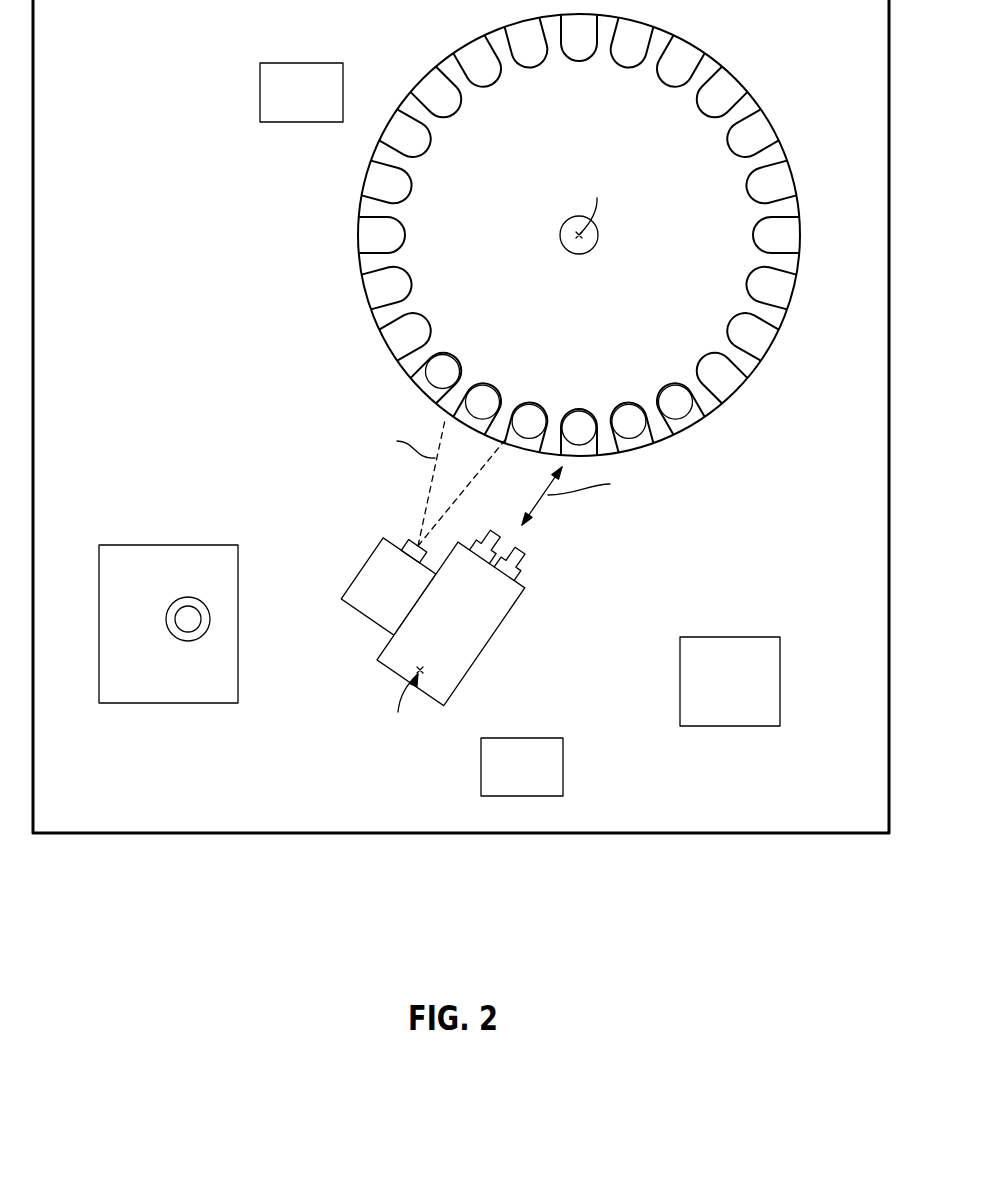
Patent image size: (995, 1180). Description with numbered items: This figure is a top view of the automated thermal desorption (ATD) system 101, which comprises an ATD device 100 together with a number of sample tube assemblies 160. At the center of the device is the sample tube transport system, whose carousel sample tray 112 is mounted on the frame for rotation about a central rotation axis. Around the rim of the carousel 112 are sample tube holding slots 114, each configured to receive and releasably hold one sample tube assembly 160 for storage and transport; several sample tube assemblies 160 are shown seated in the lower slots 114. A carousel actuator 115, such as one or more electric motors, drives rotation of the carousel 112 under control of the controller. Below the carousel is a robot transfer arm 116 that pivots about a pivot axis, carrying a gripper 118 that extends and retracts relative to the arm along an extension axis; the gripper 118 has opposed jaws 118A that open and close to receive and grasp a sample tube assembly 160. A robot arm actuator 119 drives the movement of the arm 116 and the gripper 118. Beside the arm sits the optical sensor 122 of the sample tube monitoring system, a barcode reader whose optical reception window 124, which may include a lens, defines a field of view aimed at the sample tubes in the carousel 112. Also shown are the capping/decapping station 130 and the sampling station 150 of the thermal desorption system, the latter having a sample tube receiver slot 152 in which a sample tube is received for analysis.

The automated thermal desorption (ATD) device 100 is at (233, 853).
The automated thermal desorption (ATD) system 101 is at (262, 917).
The carousel sample tray 112 is at (378, 213).
The sample tube holding slots 114 is at (473, 50).
The carousel actuator 115 is at (281, 63).
The robot transfer arm 116 is at (470, 658).
The gripper 118 is at (533, 531).
The opposed jaws 118A is at (495, 523).
The robot arm actuator 119 is at (537, 738).
The optical sensor 122 is at (350, 590).
The optical reception window 124 is at (407, 545).
The capping/decapping station 130 is at (757, 637).
The sampling station 150 is at (177, 544).
The sample tube receiver slot 152 is at (188, 619).
The sample tube assemblies 160 is at (445, 372).